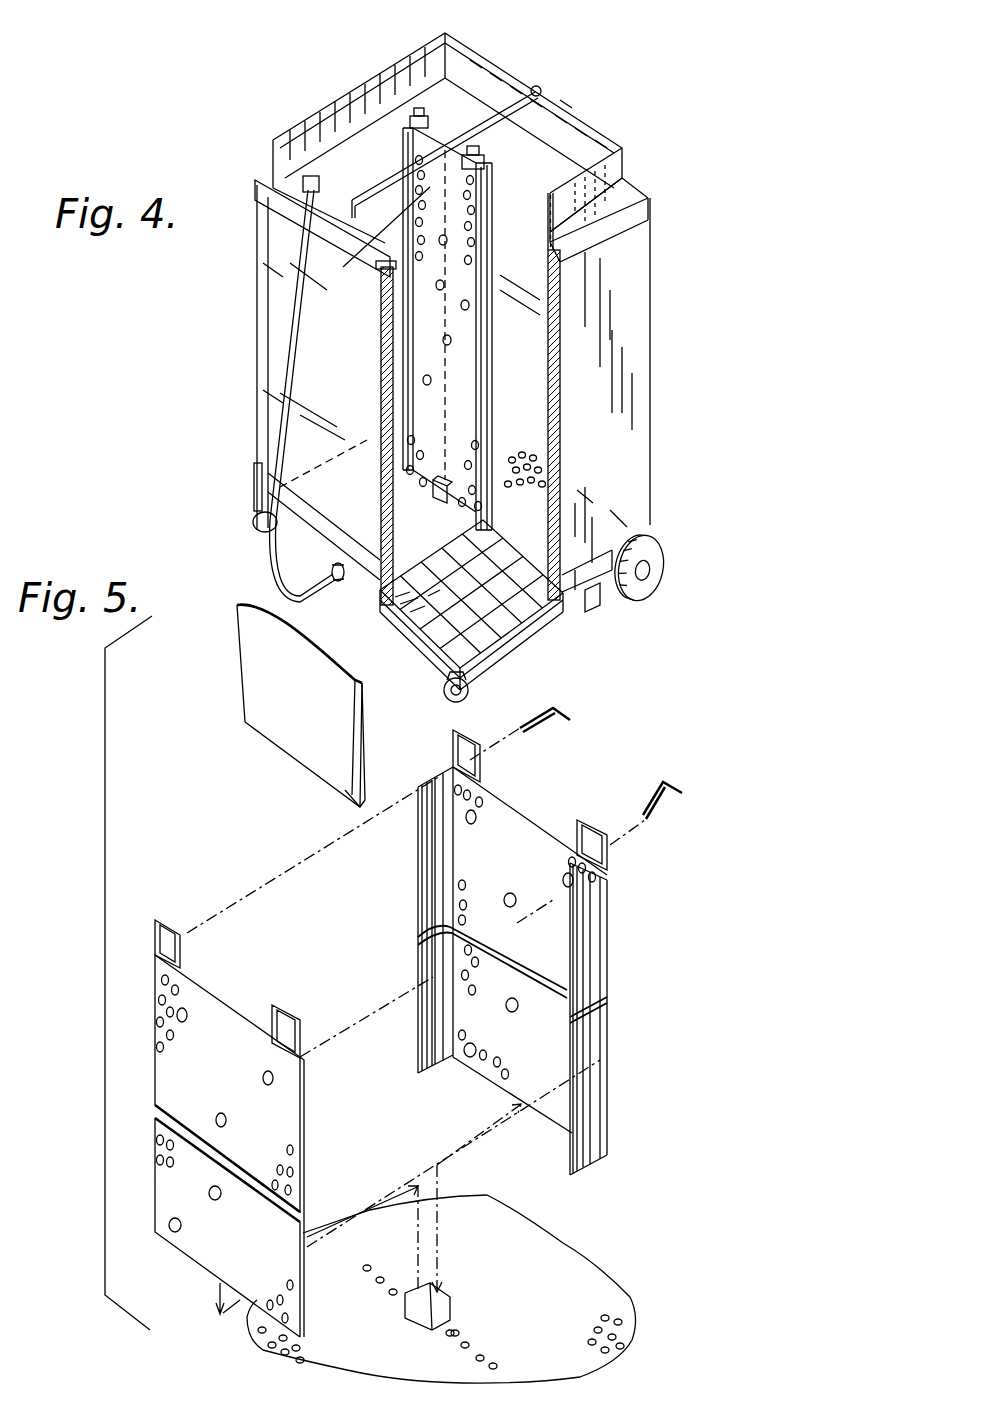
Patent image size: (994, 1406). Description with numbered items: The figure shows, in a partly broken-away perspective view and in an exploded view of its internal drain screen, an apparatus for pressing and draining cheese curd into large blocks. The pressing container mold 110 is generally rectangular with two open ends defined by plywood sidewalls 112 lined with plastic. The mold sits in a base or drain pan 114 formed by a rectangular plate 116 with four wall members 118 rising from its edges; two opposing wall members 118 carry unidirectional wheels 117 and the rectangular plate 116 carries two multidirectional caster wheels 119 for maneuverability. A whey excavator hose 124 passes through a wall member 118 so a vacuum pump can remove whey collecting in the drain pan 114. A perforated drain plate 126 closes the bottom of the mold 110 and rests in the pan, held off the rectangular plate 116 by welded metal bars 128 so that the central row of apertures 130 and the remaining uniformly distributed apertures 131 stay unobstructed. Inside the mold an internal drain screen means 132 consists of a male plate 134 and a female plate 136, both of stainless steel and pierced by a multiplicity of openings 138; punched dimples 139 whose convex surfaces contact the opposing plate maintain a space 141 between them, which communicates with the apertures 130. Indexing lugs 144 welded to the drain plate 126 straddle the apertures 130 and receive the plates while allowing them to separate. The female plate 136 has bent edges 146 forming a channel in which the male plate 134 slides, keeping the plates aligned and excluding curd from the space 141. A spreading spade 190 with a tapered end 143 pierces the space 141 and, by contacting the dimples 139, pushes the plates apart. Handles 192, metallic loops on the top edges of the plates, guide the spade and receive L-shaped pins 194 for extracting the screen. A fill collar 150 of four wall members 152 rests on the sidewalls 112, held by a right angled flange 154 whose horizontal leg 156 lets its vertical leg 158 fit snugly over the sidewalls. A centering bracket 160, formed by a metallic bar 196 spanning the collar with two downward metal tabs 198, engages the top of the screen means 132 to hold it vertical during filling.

In FIG. 4, the pressing container mold 110 is at (677, 376).
In FIG. 4, the sidewalls 112 is at (268, 300).
In FIG. 4, the drain pan 114 is at (610, 613).
In FIG. 4, the rectangular plate 116 is at (520, 653).
In FIG. 4, the unidirectional wheels 117 is at (657, 548).
In FIG. 4, the wall members 118 is at (358, 578).
In FIG. 4, the multidirectional caster wheels 119 is at (444, 690).
In FIG. 4, the whey excavator hose 124 is at (267, 550).
In FIG. 4, the drain plate 126 is at (527, 517).
In FIG. 5, the drain plate 126 is at (563, 1257).
In FIG. 4, the metal bars 128 is at (490, 597).
In FIG. 5, the apertures 130 is at (460, 1337).
In FIG. 4, the apertures 131 is at (548, 468).
In FIG. 5, the apertures 131 is at (607, 1337).
In FIG. 4, the internal drain screen means 132 is at (477, 300).
In FIG. 5, the internal drain screen means 132 is at (418, 961).
In FIG. 4, the male plate 134 is at (393, 318).
In FIG. 5, the male plate 134 is at (200, 1007).
In FIG. 4, the female plate 136 is at (443, 133).
In FIG. 5, the female plate 136 is at (503, 820).
In FIG. 4, the openings 138 is at (466, 240).
In FIG. 5, the openings 138 is at (460, 960).
In FIG. 4, the dimples 139 is at (422, 380).
In FIG. 5, the dimples 139 is at (186, 1022).
In FIG. 4, the space 141 is at (343, 270).
In FIG. 5, the space 141 is at (420, 1230).
In FIG. 5, the tapered end 143 is at (355, 808).
In FIG. 4, the indexing lugs 144 is at (432, 493).
In FIG. 5, the indexing lugs 144 is at (443, 1303).
In FIG. 5, the bent edges 146 is at (434, 830).
In FIG. 4, the fill collar 150 is at (630, 168).
In FIG. 4, the wall members 152 is at (437, 60).
In FIG. 4, the right angled flange 154 is at (650, 198).
In FIG. 4, the horizontal leg 156 is at (628, 198).
In FIG. 4, the vertical leg 158 is at (625, 223).
In FIG. 4, the centering bracket 160 is at (503, 97).
In FIG. 5, the spreading spade 190 is at (238, 645).
In FIG. 4, the handles 192 is at (477, 163).
In FIG. 5, the handles 192 is at (160, 920).
In FIG. 5, the pins 194 is at (527, 722).
In FIG. 4, the metallic bar 196 is at (352, 195).
In FIG. 4, the metal tabs 198 is at (412, 163).